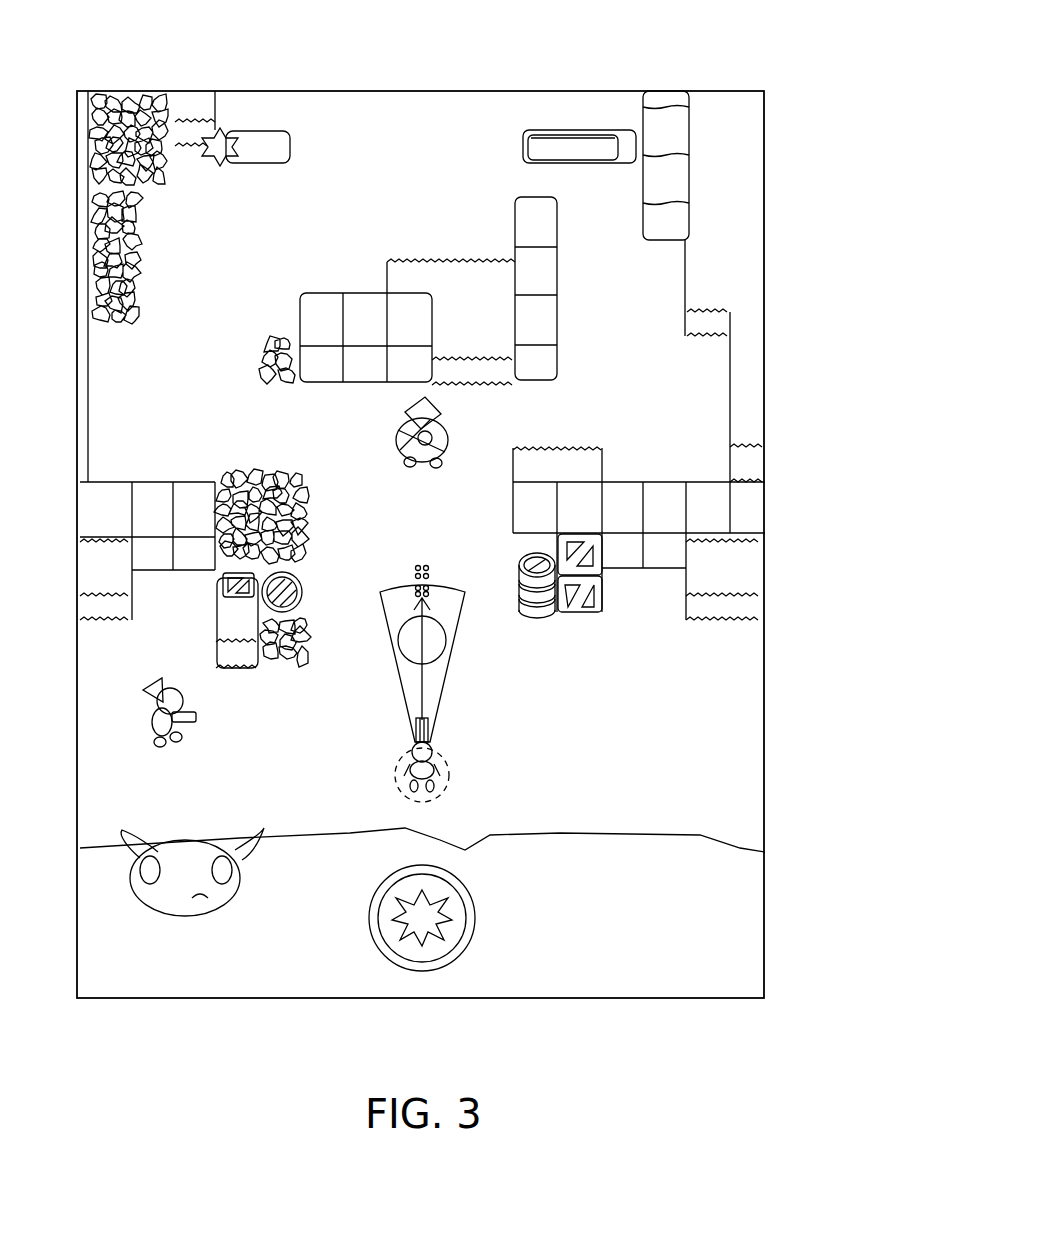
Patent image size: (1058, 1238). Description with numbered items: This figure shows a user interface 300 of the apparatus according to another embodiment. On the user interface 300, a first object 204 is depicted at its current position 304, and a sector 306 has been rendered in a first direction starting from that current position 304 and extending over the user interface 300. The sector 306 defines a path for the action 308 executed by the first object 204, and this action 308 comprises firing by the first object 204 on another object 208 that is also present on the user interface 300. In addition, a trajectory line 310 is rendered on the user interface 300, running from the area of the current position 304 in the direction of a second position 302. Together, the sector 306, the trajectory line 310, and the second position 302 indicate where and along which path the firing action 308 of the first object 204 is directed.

The user interface 300 is at (745, 56).
The another object 208 is at (90, 438).
The action 308 is at (430, 594).
The sector 306 is at (405, 700).
The second position 302 is at (440, 660).
The trajectory line 310 is at (422, 683).
The first object 204 is at (413, 762).
The current position 304 is at (446, 797).